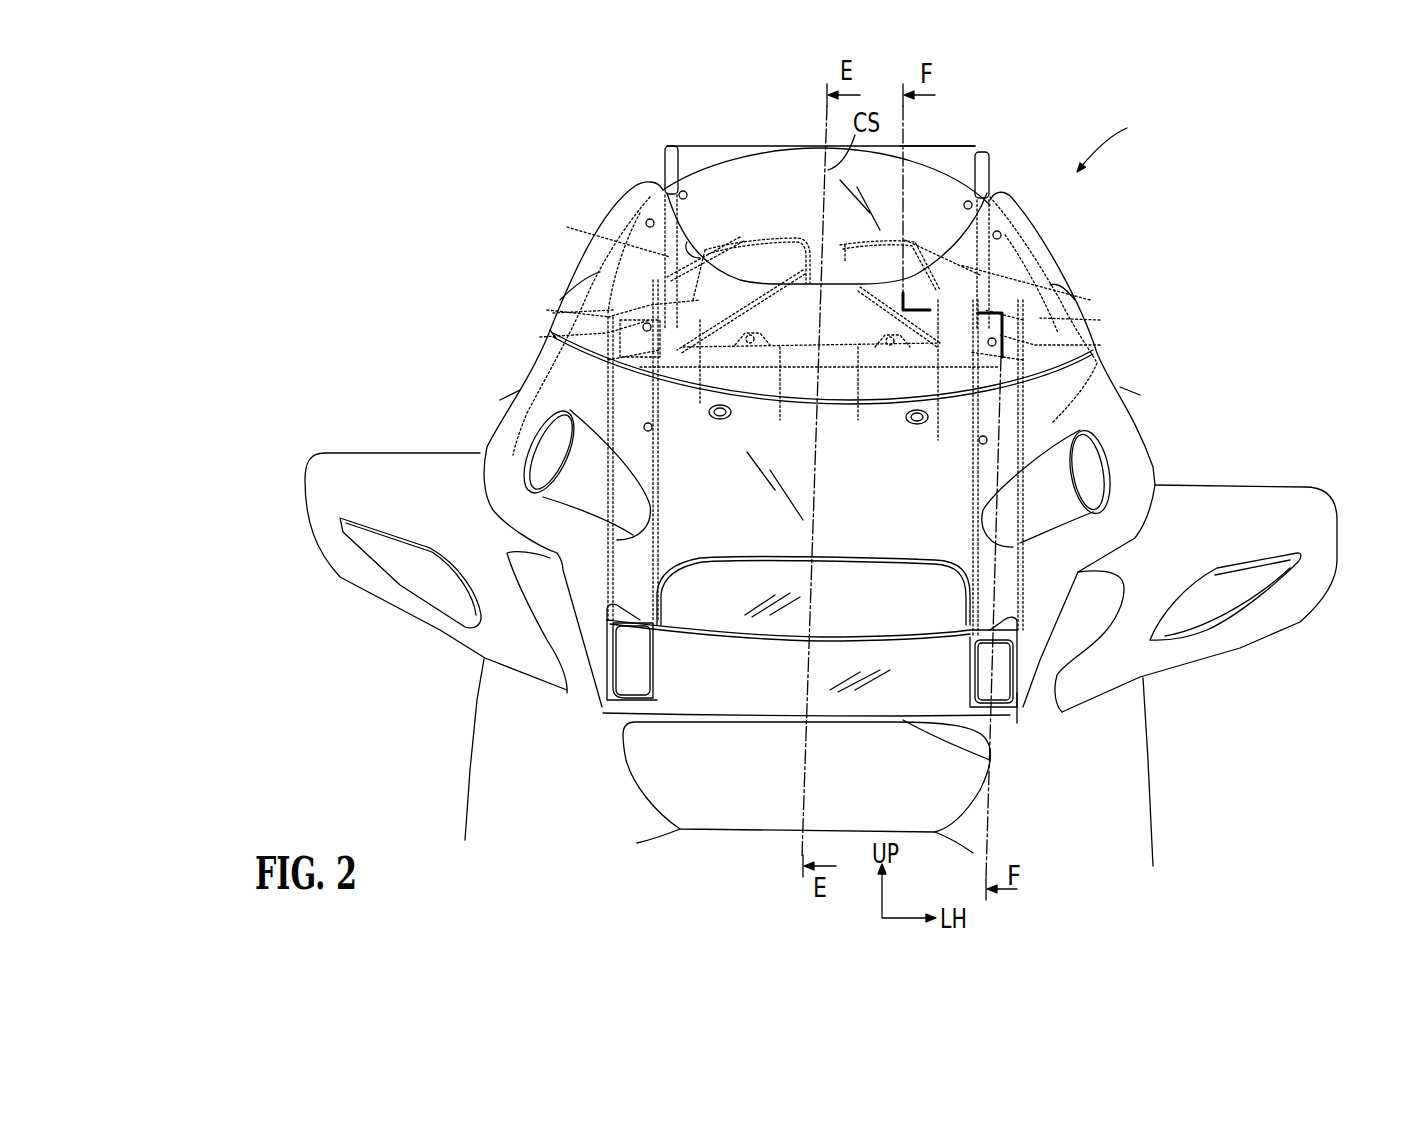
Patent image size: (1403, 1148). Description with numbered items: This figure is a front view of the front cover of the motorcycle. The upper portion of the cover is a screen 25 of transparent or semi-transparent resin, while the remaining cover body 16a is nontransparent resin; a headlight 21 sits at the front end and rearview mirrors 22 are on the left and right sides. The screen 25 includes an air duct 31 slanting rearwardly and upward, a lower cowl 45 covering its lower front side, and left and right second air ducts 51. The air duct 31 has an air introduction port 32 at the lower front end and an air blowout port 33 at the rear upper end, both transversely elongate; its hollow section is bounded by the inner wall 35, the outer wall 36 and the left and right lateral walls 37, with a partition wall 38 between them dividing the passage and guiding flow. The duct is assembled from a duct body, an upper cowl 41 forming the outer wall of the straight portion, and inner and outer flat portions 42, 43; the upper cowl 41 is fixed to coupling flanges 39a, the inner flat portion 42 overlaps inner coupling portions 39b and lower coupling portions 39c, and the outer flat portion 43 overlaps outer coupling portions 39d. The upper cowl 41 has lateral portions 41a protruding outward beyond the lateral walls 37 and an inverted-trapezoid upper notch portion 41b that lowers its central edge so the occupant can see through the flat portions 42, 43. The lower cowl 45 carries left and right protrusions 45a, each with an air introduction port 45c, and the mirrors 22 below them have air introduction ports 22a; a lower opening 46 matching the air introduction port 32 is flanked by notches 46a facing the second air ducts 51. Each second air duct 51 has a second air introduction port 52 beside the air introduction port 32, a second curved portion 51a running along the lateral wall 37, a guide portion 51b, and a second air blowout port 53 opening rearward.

The cover body 16a is at (450, 778).
The headlight 21 is at (960, 787).
The rearview mirror 22 is at (340, 465).
The air introduction port 22a is at (550, 607).
The screen 25 is at (1215, 140).
The air duct 31 is at (995, 157).
The air introduction port 32 is at (990, 760).
The air blowout port 33 is at (927, 147).
The inner wall 35 is at (723, 712).
The outer wall 36 is at (730, 563).
The lateral wall 37 is at (593, 270).
The partition wall 38 is at (765, 637).
The coupling flange 39a is at (617, 437).
The inner coupling portion 39b is at (700, 170).
The lower coupling portion 39c is at (770, 395).
The outer coupling portion 39d is at (620, 220).
The upper cowl 41 is at (1055, 240).
The lateral portion 41a is at (590, 270).
The upper notch portion 41b is at (687, 242).
The inner flat portion 42 is at (787, 147).
The outer flat portion 43 is at (753, 167).
The lower cowl 45 is at (1157, 425).
The protrusion 45a is at (523, 428).
The air introduction port 45c is at (543, 463).
The lower opening 46 is at (853, 572).
The notch 46a is at (607, 605).
The second air duct 51 is at (600, 303).
The second curved portion 51a is at (655, 545).
The guide portion 51b is at (699, 410).
The second air introduction port 52 is at (623, 678).
The second air blowout port 53 is at (778, 257).